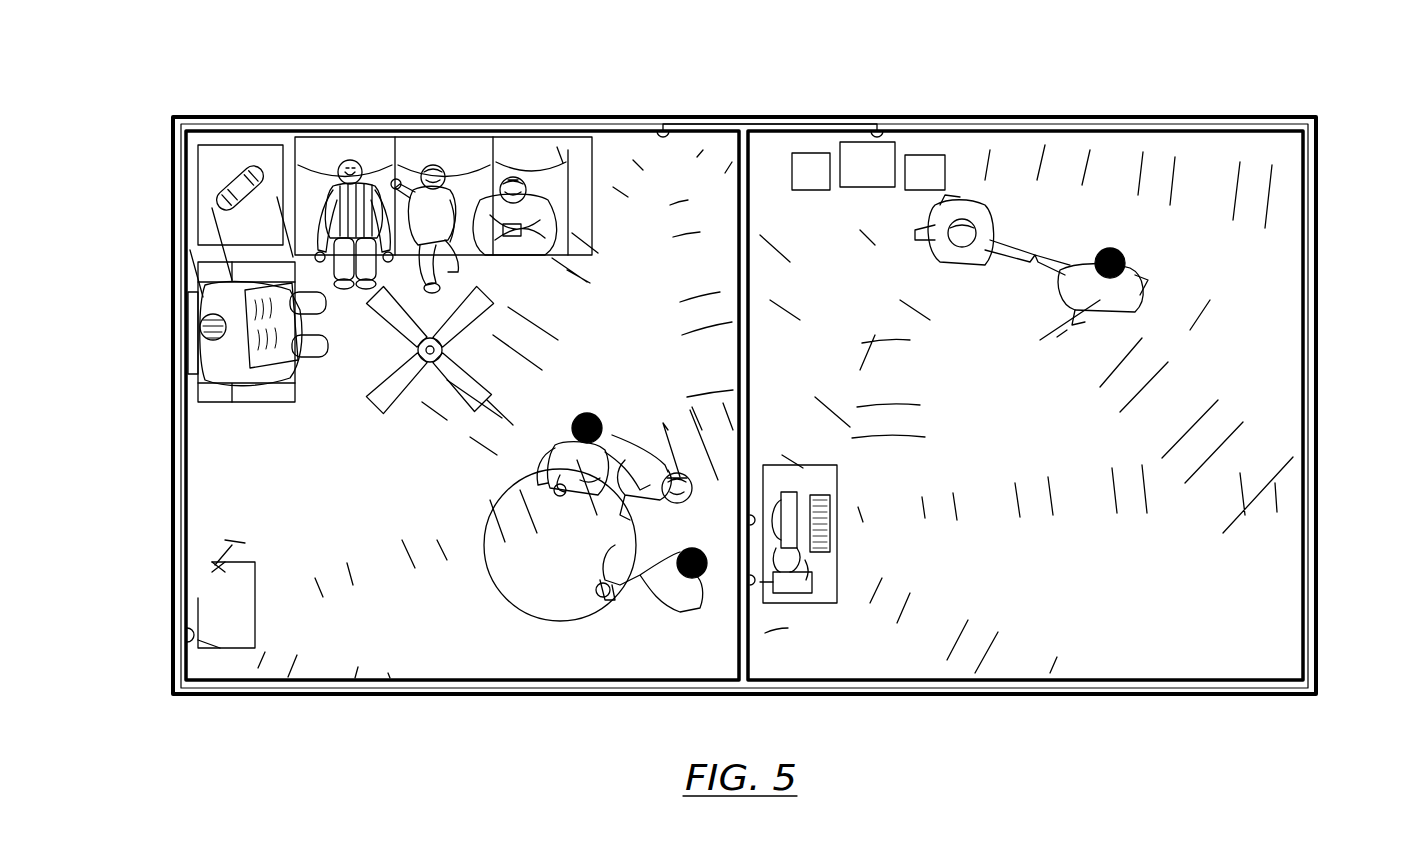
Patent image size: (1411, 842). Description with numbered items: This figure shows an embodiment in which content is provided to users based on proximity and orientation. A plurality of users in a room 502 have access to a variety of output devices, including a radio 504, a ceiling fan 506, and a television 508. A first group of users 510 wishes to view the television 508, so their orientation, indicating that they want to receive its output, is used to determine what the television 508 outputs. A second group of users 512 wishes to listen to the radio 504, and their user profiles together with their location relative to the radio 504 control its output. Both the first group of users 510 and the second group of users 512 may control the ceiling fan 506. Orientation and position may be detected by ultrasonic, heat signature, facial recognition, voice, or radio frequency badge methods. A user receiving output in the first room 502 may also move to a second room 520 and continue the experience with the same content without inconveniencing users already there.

The room 502 is at (184, 412).
The radio 504 is at (262, 168).
The ceiling fan 506 is at (443, 350).
The television 508 is at (213, 612).
The first group of users 510 is at (600, 668).
The second group of users 512 is at (554, 94).
The second room 520 is at (1306, 225).